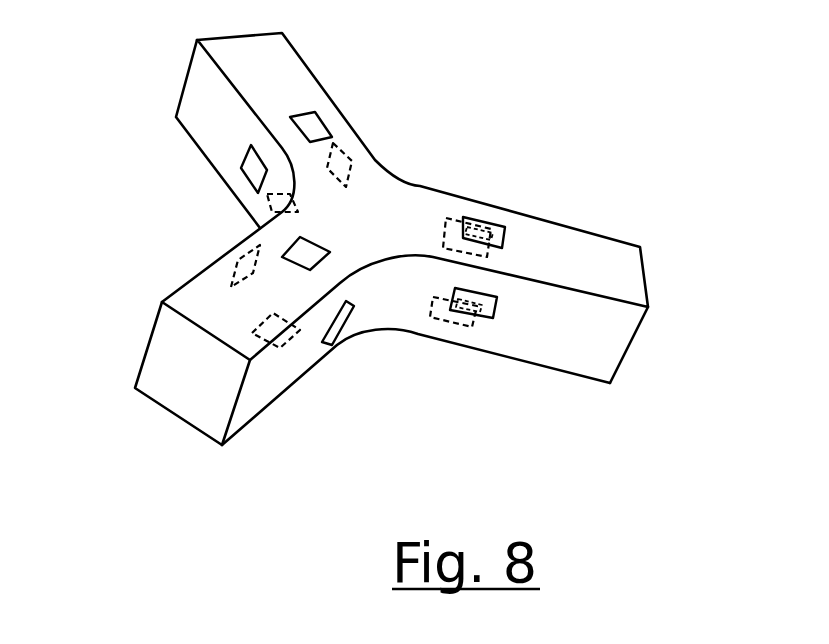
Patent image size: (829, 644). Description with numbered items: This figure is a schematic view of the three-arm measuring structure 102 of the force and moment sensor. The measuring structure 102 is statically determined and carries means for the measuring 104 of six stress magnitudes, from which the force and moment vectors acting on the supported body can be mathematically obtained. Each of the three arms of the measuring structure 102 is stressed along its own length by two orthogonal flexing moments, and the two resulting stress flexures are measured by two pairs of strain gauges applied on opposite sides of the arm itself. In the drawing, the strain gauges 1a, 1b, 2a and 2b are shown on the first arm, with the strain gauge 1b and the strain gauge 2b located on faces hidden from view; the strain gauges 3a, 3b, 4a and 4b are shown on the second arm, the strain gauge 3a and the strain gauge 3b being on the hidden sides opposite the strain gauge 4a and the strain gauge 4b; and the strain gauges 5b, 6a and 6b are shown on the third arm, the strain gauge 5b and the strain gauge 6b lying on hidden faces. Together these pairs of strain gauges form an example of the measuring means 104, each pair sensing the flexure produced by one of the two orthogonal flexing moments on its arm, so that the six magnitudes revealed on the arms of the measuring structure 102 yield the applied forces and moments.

The strain gauge 1a is at (313, 127).
The strain gauge 1b is at (290, 213).
The strain gauge 2a is at (248, 168).
The strain gauge 2b is at (338, 158).
The strain gauge 3a is at (503, 230).
The strain gauge 3b is at (443, 297).
The strain gauge 4a is at (458, 242).
The strain gauge 4b is at (490, 292).
The strain gauge 5b is at (283, 343).
The strain gauge 6a is at (303, 252).
The strain gauge 6b is at (240, 268).
The three-arm measuring structure 102 is at (563, 240).
The means for the measuring 104 is at (462, 368).